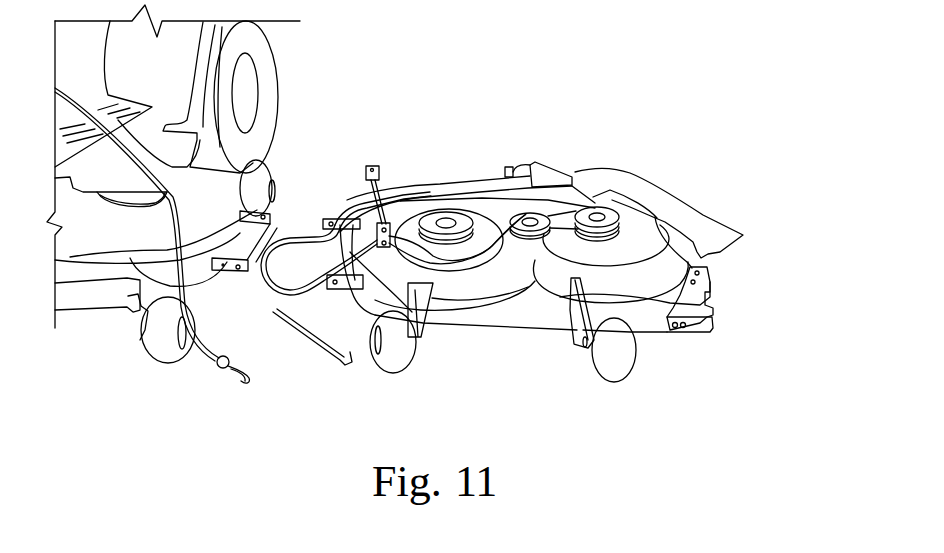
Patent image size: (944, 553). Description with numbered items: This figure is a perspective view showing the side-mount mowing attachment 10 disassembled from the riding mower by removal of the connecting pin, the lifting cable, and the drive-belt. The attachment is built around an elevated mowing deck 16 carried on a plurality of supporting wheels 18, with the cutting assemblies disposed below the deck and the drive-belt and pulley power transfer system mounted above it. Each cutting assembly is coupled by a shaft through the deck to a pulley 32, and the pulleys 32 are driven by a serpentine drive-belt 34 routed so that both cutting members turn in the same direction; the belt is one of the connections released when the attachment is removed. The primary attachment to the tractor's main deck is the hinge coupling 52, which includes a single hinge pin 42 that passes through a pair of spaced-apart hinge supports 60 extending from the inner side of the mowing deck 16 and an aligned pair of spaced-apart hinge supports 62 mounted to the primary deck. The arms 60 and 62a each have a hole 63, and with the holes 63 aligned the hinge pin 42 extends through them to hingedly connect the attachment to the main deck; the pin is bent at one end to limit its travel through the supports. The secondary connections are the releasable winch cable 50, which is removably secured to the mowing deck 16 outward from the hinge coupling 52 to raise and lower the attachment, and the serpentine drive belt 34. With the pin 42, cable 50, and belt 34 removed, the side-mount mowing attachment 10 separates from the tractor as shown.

The side-mount mowing attachment 10 is at (744, 298).
The elevated mowing deck 16 is at (490, 344).
The supporting wheels 18 is at (403, 377).
The pulley 32 is at (462, 211).
The serpentine drive-belt 34 is at (386, 188).
The hinge pin 42 is at (320, 370).
The winch cable 50 is at (184, 212).
The hinge coupling 52 is at (303, 268).
The hinge supports 60 is at (310, 252).
The hinge supports 62 is at (243, 228).
The hinge support arms 62a is at (223, 271).
The hole 63 is at (240, 272).